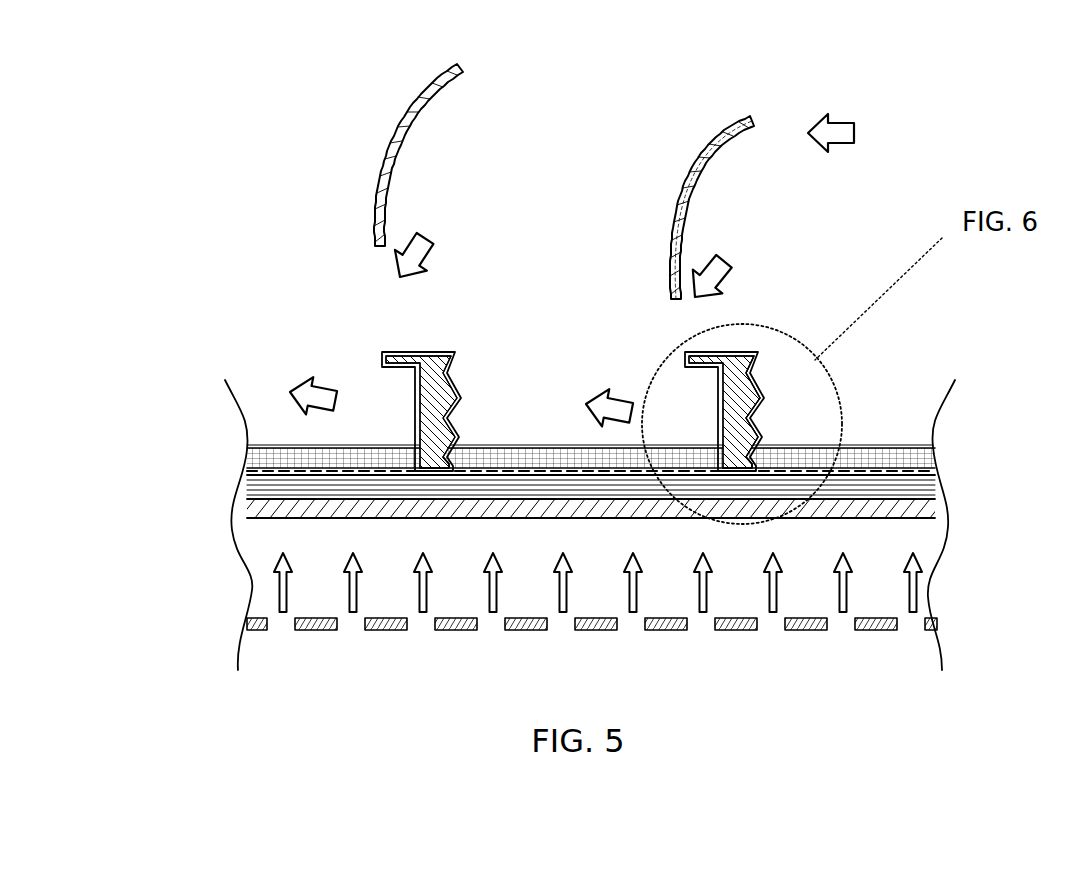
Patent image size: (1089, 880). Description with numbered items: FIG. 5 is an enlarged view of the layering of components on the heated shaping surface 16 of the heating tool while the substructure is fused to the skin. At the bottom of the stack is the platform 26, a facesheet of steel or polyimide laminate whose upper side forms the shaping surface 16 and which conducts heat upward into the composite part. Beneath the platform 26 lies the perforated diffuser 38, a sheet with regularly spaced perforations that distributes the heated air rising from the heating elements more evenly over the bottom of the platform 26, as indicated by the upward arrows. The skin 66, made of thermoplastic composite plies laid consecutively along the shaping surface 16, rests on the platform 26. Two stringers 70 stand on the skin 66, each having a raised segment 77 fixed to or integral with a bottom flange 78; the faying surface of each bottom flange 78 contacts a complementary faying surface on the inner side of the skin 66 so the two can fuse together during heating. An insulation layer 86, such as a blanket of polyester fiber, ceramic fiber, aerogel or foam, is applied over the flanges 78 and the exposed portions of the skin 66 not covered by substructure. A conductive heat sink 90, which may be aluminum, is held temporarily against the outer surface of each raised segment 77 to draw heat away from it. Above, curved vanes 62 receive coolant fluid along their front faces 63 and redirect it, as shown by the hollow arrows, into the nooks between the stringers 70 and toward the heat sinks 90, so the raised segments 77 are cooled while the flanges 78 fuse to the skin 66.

The shaping surface 16 is at (262, 497).
The platform 26 is at (937, 506).
The perforated diffuser 38 is at (880, 640).
The vane 62 is at (727, 107).
The front face 63 is at (717, 158).
The skin 66 is at (931, 482).
The stringer 70 is at (393, 345).
The raised segment 77 is at (414, 407).
The bottom flange 78 is at (443, 466).
The insulation layer 86 is at (902, 455).
The conductive heat sink 90 is at (737, 372).